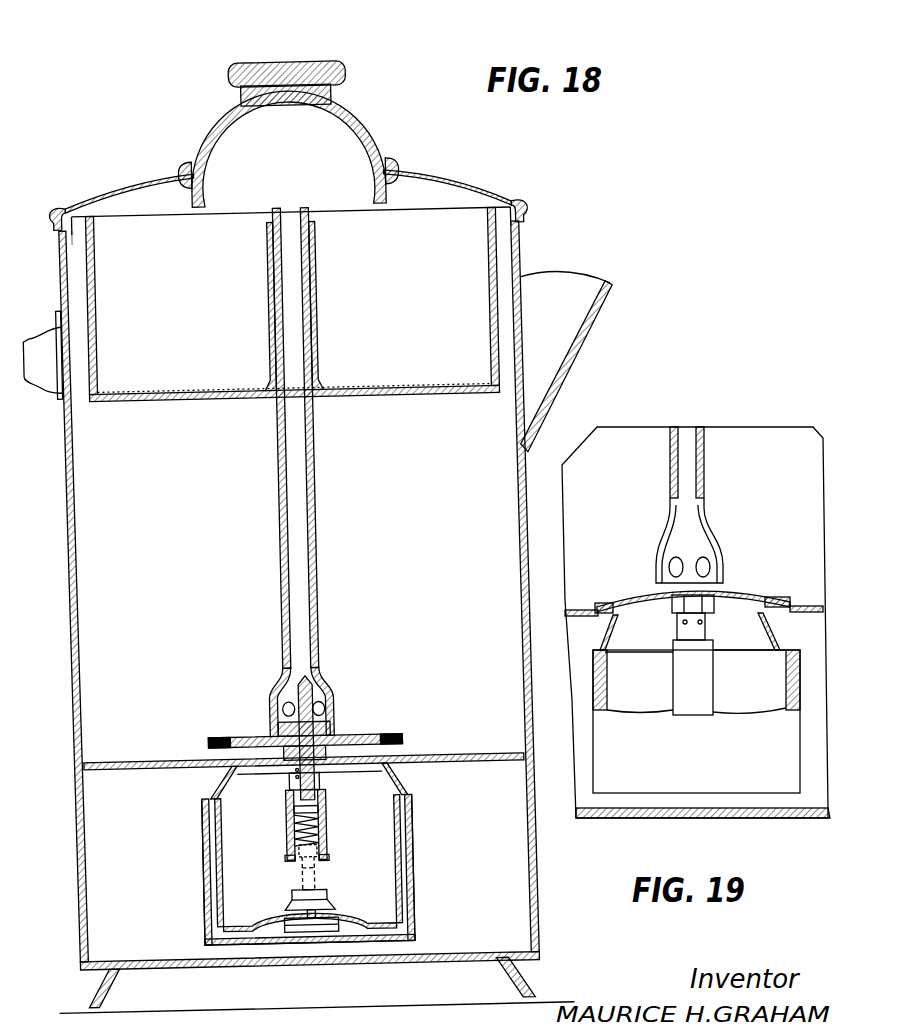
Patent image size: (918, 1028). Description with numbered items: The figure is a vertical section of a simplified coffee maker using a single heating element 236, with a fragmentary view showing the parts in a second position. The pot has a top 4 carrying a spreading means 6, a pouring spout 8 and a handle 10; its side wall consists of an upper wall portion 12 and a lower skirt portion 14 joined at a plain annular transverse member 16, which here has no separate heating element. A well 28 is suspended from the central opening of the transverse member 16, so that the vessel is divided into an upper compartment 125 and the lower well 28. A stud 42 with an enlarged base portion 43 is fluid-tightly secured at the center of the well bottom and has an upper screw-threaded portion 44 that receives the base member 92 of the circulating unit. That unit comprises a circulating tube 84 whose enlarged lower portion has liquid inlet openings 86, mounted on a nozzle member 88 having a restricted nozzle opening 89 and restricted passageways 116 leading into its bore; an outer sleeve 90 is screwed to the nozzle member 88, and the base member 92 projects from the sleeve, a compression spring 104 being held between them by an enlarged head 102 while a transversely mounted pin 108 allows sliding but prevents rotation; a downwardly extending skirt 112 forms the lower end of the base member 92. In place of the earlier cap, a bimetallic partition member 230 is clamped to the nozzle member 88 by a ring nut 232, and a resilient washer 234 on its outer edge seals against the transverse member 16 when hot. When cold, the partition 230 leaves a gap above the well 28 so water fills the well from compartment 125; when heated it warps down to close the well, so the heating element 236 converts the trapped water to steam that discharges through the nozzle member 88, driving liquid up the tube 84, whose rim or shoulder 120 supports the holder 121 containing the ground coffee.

In FIG. 18, the top 4 is at (455, 177).
In FIG. 18, the spreading means 6 is at (317, 62).
In FIG. 18, the pouring spout 8 is at (582, 337).
In FIG. 18, the handle 10 is at (45, 363).
In FIG. 18, the upper wall portion 12 is at (69, 628).
In FIG. 18, the lower skirt portion 14 is at (72, 858).
In FIG. 18, the transverse member 16 is at (133, 756).
In FIG. 19, the transverse member 16 is at (586, 618).
In FIG. 18, the well 28 is at (397, 868).
In FIG. 19, the well 28 is at (620, 690).
In FIG. 18, the stud 42 is at (303, 920).
In FIG. 18, the enlarged base portion 43 is at (322, 930).
In FIG. 18, the upper screw-threaded portion 44 is at (310, 878).
In FIG. 18, the circulating tube 84 is at (318, 470).
In FIG. 19, the circulating tube 84 is at (705, 456).
In FIG. 18, the liquid inlet openings 86 is at (318, 704).
In FIG. 19, the liquid inlet openings 86 is at (703, 557).
In FIG. 18, the nozzle member 88 is at (332, 716).
In FIG. 19, the nozzle member 88 is at (680, 643).
In FIG. 18, the restricted nozzle opening 89 is at (318, 674).
In FIG. 18, the outer sleeve 90 is at (283, 806).
In FIG. 19, the outer sleeve 90 is at (700, 668).
In FIG. 18, the base member 92 is at (288, 877).
In FIG. 18, the enlarged head 102 is at (320, 818).
In FIG. 18, the compression spring 104 is at (320, 834).
In FIG. 18, the transversely mounted pin 108 is at (318, 860).
In FIG. 18, the downwardly extending skirt 112 is at (325, 905).
In FIG. 18, the restricted passageways 116 is at (291, 777).
In FIG. 19, the restricted passageways 116 is at (682, 624).
In FIG. 18, the rim or shoulder 120 is at (323, 399).
In FIG. 18, the holder 121 is at (183, 386).
In FIG. 18, the compartment 125 is at (111, 540).
In FIG. 19, the compartment 125 is at (617, 530).
In FIG. 18, the bimetallic partition member 230 is at (237, 736).
In FIG. 19, the bimetallic partition member 230 is at (640, 590).
In FIG. 18, the ring nut 232 is at (326, 760).
In FIG. 19, the ring nut 232 is at (712, 605).
In FIG. 18, the resilient washer 234 is at (400, 741).
In FIG. 19, the resilient washer 234 is at (607, 601).
In FIG. 18, the heating element 236 is at (410, 835).
In FIG. 19, the heating element 236 is at (593, 756).